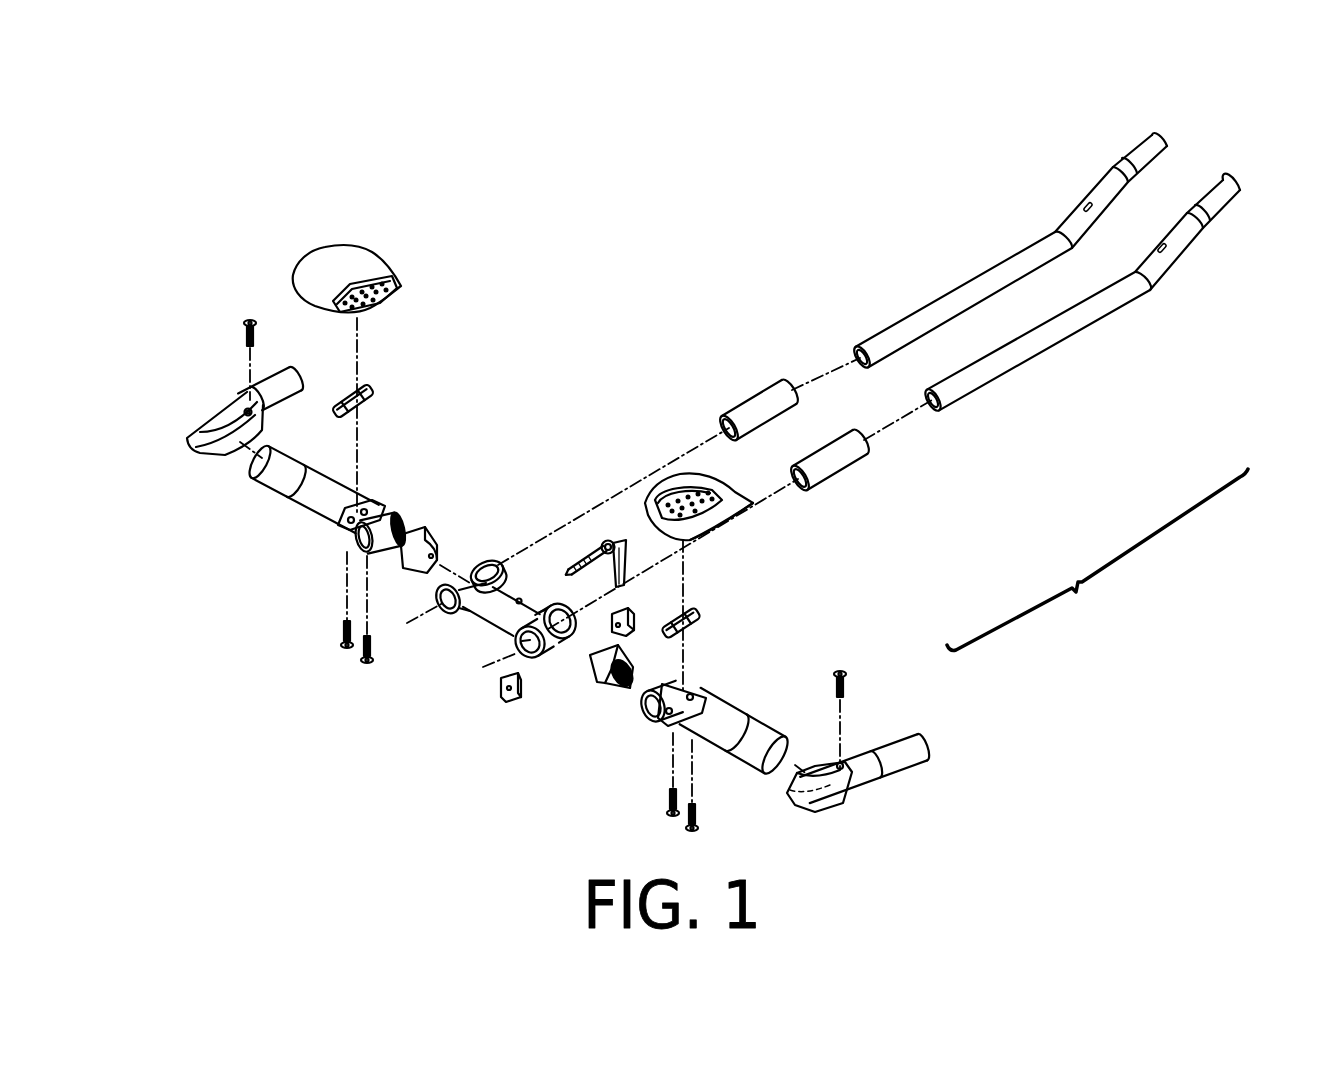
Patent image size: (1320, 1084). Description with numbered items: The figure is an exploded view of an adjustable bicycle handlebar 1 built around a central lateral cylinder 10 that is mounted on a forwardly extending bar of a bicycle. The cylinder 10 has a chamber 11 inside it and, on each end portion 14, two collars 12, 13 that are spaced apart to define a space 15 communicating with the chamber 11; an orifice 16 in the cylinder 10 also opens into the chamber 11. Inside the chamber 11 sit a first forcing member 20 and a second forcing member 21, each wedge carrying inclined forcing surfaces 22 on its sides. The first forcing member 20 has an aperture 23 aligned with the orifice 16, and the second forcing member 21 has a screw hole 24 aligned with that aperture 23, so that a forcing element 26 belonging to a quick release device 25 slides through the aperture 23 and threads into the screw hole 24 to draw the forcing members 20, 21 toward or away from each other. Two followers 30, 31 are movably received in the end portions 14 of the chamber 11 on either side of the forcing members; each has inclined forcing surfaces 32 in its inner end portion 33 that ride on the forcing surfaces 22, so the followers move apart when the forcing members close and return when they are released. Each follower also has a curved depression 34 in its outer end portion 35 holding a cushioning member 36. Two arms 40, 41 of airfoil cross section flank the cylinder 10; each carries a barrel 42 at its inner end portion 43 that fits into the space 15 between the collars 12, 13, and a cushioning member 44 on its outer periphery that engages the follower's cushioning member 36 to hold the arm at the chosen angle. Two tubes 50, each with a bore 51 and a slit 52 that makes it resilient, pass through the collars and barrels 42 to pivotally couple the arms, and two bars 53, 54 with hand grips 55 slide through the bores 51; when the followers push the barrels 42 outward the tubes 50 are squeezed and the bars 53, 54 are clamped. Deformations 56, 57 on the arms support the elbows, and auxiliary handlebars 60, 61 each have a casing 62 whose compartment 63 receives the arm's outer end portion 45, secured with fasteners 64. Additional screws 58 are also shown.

The adjustable bicycle handlebar 1 is at (586, 353).
The central lateral cylinder 10 is at (513, 582).
The chamber 11 is at (543, 610).
The collar 12 is at (445, 608).
The collar 13 is at (482, 553).
The end portion 14 is at (512, 641).
The space 15 is at (463, 573).
The orifice 16 is at (526, 592).
The first forcing member 20 is at (624, 615).
The second forcing member 21 is at (510, 703).
The inclined forcing surface 22 is at (623, 628).
The aperture 23 is at (620, 636).
The screw hole 24 is at (507, 690).
The quick release device 25 is at (617, 533).
The forcing element 26 is at (590, 553).
The follower 30 is at (608, 686).
The follower 31 is at (412, 570).
The inclined forcing surface 32 is at (425, 572).
The inner end portion 33 is at (593, 672).
The curved depression 34 is at (628, 690).
The outer end portion 35 is at (415, 537).
The cushioning member 36 is at (636, 680).
The arm 40 is at (732, 720).
The arm 41 is at (327, 483).
The barrel 42 is at (683, 680).
The inner end portion 43 is at (389, 503).
The cushioning member 44 is at (360, 547).
The outer end portion 45 is at (298, 446).
The tube 50 is at (827, 462).
The bore 51 is at (812, 487).
The slit 52 is at (760, 397).
The bar 53 is at (1045, 338).
The bar 54 is at (974, 292).
The hand grip 55 is at (1210, 197).
The deformation 56 is at (732, 487).
The deformation 57 is at (362, 250).
The screws 58 is at (690, 822).
The auxiliary handlebar 60 is at (907, 772).
The auxiliary handlebar 61 is at (280, 370).
The casing 62 is at (800, 800).
The compartment 63 is at (225, 452).
The fastener 64 is at (847, 680).